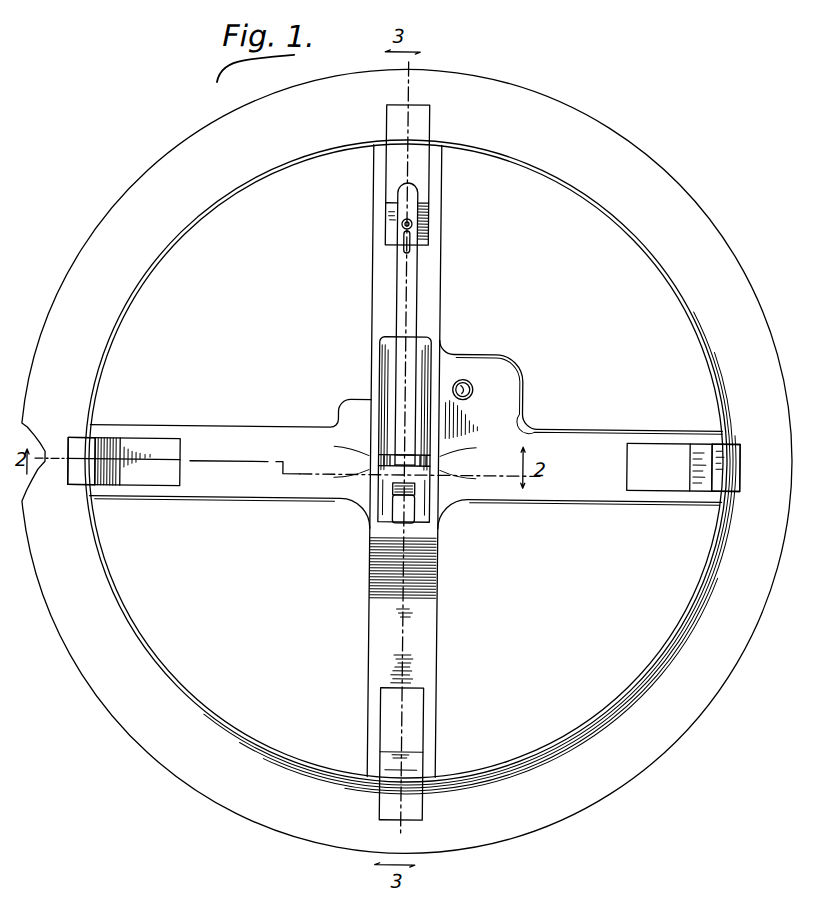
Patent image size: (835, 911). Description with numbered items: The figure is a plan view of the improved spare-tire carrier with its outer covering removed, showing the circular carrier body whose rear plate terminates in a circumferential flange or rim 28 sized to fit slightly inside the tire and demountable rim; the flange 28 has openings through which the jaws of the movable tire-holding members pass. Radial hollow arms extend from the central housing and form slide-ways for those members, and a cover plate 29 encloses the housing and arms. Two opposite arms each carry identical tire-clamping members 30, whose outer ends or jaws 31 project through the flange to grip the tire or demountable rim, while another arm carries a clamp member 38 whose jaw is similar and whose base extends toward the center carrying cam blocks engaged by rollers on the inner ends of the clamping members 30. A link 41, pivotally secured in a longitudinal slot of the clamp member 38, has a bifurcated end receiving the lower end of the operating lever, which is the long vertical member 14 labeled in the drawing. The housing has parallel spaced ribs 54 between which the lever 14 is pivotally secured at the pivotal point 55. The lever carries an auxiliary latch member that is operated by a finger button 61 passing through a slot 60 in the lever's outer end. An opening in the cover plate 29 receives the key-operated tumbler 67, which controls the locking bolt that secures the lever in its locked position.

The vertical slide bar 14 is at (409, 298).
The circumferential flange or rim 28 is at (130, 625).
The cover plate 29 is at (509, 397).
The tire-clamping members 30 is at (97, 446).
The outer ends or jaws 31 is at (73, 446).
The clamp member 38 is at (416, 777).
The link 41 is at (416, 505).
The spaced ribs 54 is at (431, 362).
The pivotal point 55 is at (378, 474).
The slot 60 is at (407, 248).
The finger grasp or button 61 is at (424, 218).
The key-operated tumbler 67 is at (473, 383).